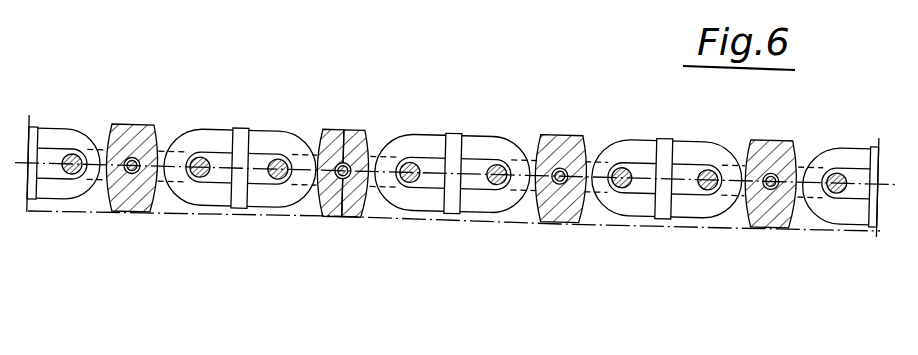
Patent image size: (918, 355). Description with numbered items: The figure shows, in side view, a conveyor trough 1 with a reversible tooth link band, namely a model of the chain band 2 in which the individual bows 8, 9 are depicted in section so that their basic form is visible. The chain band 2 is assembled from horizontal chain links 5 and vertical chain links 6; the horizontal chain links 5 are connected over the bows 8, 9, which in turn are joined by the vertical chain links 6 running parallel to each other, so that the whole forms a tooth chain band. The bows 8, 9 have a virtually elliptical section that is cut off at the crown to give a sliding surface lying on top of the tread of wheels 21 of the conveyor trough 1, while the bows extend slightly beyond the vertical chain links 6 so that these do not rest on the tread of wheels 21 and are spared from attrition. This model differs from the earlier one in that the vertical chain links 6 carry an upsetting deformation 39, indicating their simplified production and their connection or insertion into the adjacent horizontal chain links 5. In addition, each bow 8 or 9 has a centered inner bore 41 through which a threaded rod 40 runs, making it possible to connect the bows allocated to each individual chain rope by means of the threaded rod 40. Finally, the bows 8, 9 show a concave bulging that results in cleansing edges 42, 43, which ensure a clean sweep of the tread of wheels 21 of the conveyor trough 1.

The conveyor trough 1 is at (730, 228).
The chain band 2 is at (454, 190).
The horizontal chain link 5 is at (331, 177).
The vertical chain link 6 is at (452, 177).
The bow 8 is at (563, 125).
The bow 9 is at (560, 176).
The tread of wheels 21 is at (515, 220).
The upsetting deformation 39 is at (453, 134).
The threaded rod 40 is at (591, 176).
The centered inner bore 41 is at (587, 150).
The cleansing edge 42 is at (332, 215).
The cleansing edge 43 is at (357, 213).